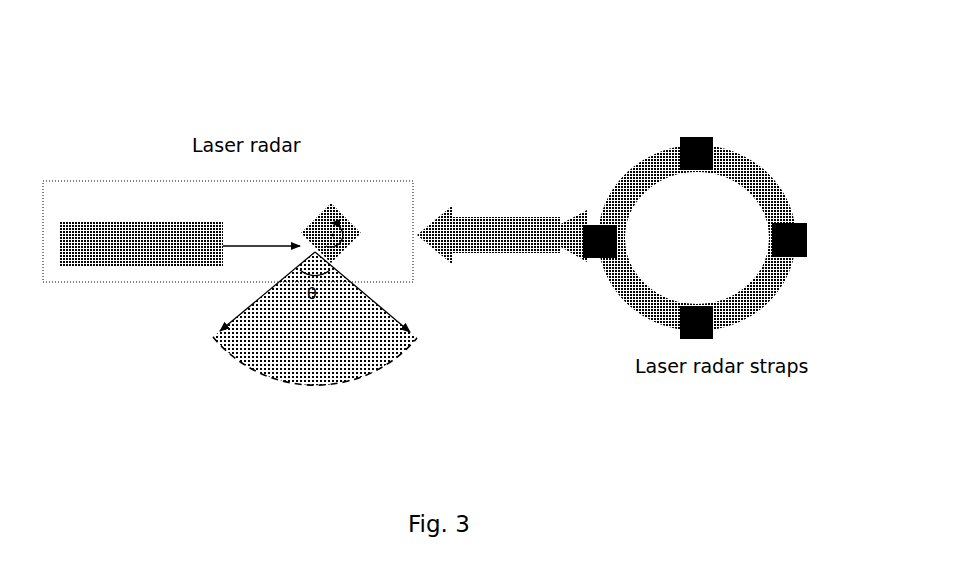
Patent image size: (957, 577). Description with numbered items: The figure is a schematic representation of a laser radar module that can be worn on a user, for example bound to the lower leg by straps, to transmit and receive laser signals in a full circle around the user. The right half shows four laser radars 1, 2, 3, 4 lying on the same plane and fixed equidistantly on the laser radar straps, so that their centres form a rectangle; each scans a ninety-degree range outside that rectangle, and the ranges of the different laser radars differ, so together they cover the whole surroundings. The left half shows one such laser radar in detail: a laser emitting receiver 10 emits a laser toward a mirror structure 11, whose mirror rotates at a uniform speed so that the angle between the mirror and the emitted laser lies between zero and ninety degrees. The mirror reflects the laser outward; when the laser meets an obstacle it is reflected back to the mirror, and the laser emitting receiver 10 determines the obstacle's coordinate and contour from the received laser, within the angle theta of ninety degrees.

The laser emitting receiver 10 is at (137, 227).
The mirror structure 11 is at (318, 230).
The laser radar 1 is at (696, 169).
The laser radar 2 is at (780, 240).
The laser radar 3 is at (696, 307).
The laser radar 4 is at (613, 241).